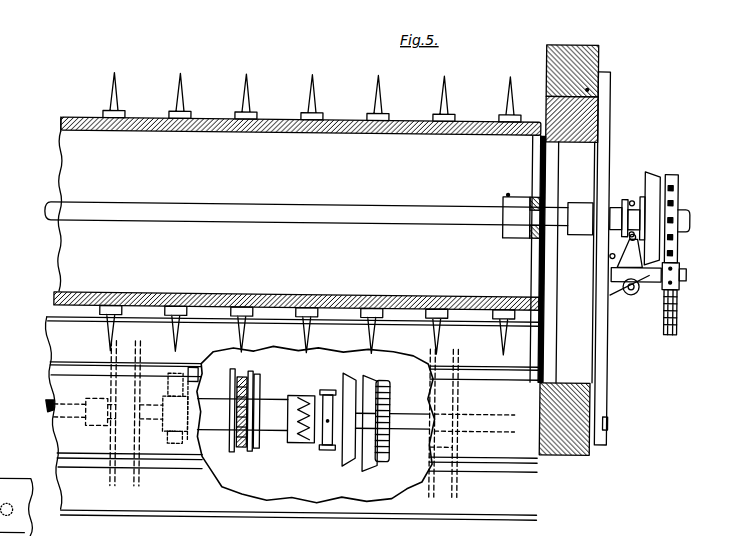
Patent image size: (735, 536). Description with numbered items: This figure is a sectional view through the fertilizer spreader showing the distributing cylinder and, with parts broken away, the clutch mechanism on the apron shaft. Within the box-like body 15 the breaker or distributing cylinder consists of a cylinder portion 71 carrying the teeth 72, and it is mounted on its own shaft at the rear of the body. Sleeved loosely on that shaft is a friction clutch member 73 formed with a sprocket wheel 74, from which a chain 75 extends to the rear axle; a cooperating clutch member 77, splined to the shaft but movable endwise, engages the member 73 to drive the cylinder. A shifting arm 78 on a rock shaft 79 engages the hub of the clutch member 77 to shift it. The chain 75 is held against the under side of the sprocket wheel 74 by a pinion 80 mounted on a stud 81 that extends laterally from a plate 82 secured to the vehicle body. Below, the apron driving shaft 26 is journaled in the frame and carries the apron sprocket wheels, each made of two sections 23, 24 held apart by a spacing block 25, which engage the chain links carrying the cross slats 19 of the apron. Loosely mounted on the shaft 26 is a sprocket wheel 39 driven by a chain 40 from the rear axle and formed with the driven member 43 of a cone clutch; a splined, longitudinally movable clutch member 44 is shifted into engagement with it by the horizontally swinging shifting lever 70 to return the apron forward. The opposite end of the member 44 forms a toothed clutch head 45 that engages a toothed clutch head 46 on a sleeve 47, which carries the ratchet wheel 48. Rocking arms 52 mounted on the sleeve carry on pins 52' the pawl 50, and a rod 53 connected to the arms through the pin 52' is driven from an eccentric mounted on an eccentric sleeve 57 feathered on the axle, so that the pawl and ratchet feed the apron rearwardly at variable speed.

The cylinder portion 71 is at (207, 117).
The teeth 72 is at (375, 90).
The friction clutch member 73 is at (654, 172).
The sprocket wheel 74 is at (679, 186).
The chain 75 is at (679, 291).
The clutch member 77 is at (643, 177).
The shifting arm 78 is at (625, 235).
The rock shaft 79 is at (633, 290).
The pinion 80 is at (687, 264).
The stud 81 is at (658, 277).
The plate 82 is at (609, 361).
The body 15 is at (570, 452).
The cross slats 19 is at (55, 440).
The section 23 is at (114, 481).
The section 24 is at (142, 481).
The spacing block 25 is at (16, 506).
The apron driving shaft 26 is at (50, 402).
The eccentric sleeve 57 is at (113, 440).
The sprocket wheel 39 is at (393, 448).
The chain 40 is at (393, 390).
The driven member of cone clutch 43 is at (380, 372).
The clutch member 44 is at (351, 463).
The toothed clutch head 45 is at (312, 441).
The toothed clutch head 46 is at (302, 393).
The sleeve 47 is at (272, 397).
The ratchet wheel 48 is at (244, 447).
The pawl 50 is at (259, 371).
The rocking arms 52 is at (257, 421).
The pins 52' is at (208, 403).
The rod 53 is at (257, 369).
The shifting lever 70 is at (331, 387).